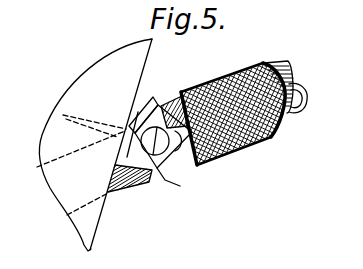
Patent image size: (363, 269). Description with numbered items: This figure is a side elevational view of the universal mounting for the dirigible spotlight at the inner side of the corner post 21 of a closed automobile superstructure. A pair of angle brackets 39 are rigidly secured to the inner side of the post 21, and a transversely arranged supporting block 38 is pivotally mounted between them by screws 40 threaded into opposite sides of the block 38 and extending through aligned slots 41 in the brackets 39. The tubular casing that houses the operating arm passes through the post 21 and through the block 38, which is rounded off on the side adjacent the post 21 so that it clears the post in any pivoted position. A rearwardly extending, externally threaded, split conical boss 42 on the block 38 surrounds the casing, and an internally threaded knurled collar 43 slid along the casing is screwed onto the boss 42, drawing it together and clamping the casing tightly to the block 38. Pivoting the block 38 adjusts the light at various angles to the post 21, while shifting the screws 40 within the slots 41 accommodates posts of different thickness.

The corner post 21 is at (116, 68).
The supporting block 38 is at (157, 103).
The angle brackets 39 is at (178, 184).
The screws 40 is at (163, 176).
The slots 41 is at (195, 165).
The split conical boss 42 is at (176, 100).
The knurled collar 43 is at (269, 136).